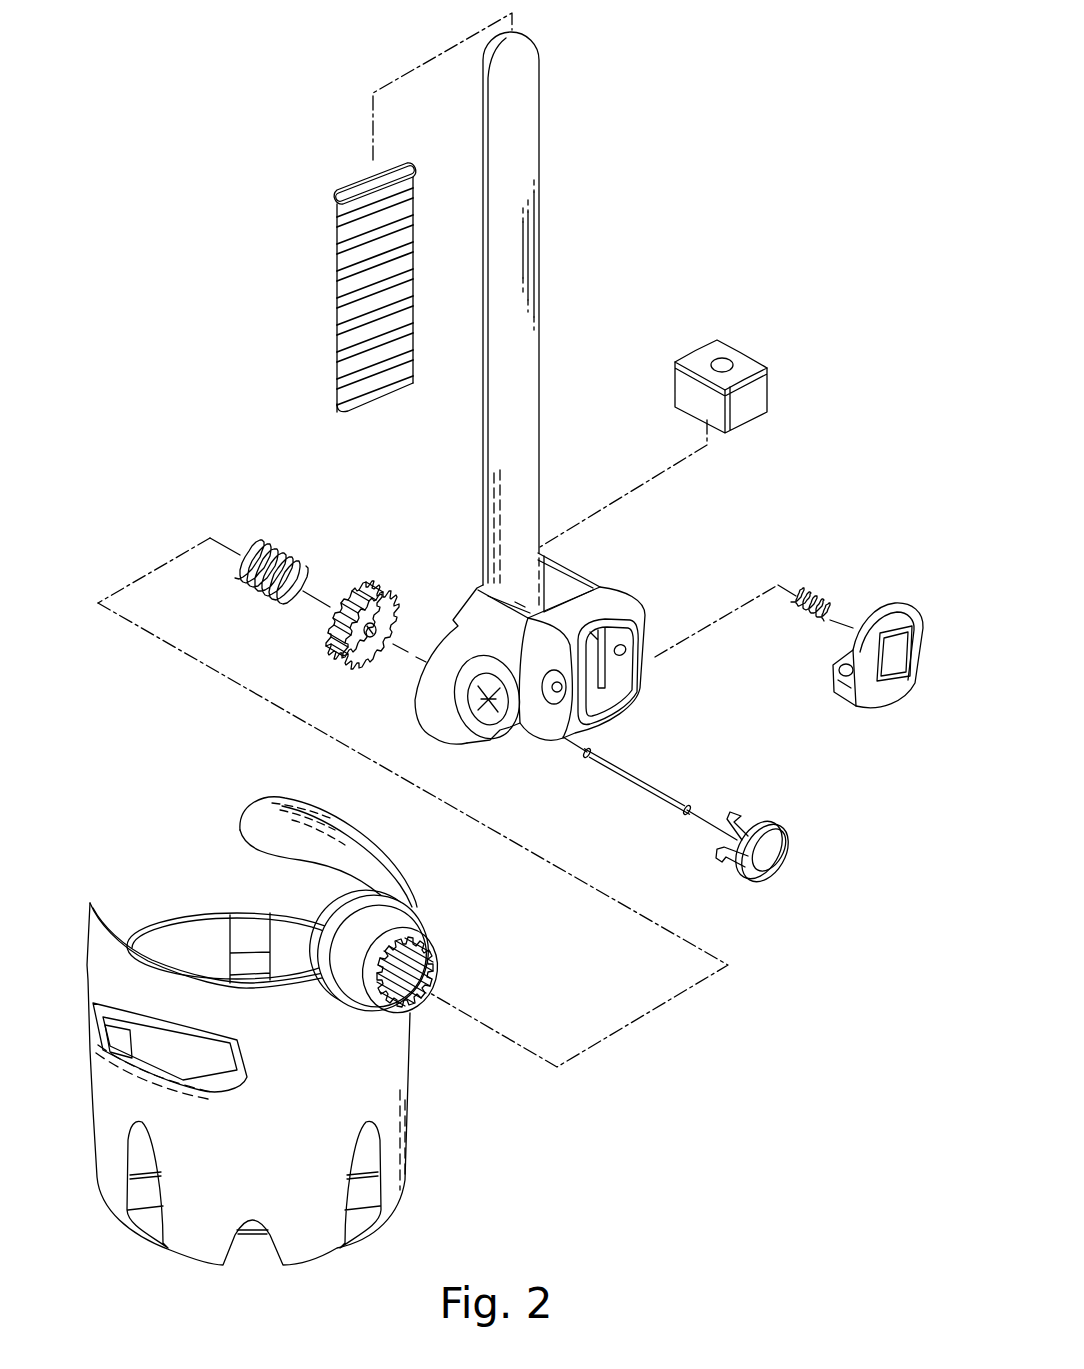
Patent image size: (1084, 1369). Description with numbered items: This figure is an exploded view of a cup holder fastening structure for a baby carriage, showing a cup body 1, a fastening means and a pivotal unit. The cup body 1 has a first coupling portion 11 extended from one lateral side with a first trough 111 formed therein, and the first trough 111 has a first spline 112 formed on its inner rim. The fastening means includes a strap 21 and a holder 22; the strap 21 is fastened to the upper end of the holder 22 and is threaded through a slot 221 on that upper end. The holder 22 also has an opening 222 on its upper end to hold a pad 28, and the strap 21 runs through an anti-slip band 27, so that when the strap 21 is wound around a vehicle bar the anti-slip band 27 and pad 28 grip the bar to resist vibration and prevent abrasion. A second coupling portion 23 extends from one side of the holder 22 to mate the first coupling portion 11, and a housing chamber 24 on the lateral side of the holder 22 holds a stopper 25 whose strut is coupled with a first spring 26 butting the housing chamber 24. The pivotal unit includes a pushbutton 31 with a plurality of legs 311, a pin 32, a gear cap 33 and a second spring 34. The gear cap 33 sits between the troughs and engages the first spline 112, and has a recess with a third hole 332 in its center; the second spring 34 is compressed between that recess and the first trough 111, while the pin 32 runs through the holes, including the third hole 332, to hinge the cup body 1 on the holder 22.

The cup body 1 is at (193, 937).
The first coupling portion 11 is at (430, 925).
The first trough 111 is at (415, 1005).
The first spline 112 is at (445, 965).
The strap 21 is at (523, 133).
The holder 22 is at (500, 747).
The slot 221 is at (603, 598).
The opening 222 is at (562, 593).
The second coupling portion 23 is at (452, 648).
The housing chamber 24 is at (615, 685).
The stopper 25 is at (888, 690).
The first spring 26 is at (815, 593).
The anti-slip band 27 is at (337, 291).
The pad 28 is at (723, 352).
The pushbutton 31 is at (767, 863).
The legs 311 is at (763, 825).
The pin 32 is at (655, 793).
The gear cap 33 is at (362, 580).
The third hole 332 is at (372, 636).
The second spring 34 is at (262, 538).